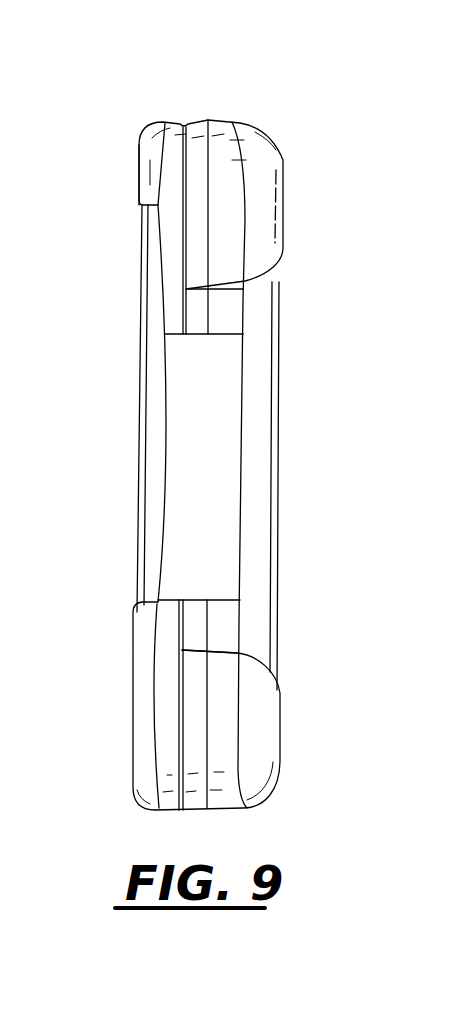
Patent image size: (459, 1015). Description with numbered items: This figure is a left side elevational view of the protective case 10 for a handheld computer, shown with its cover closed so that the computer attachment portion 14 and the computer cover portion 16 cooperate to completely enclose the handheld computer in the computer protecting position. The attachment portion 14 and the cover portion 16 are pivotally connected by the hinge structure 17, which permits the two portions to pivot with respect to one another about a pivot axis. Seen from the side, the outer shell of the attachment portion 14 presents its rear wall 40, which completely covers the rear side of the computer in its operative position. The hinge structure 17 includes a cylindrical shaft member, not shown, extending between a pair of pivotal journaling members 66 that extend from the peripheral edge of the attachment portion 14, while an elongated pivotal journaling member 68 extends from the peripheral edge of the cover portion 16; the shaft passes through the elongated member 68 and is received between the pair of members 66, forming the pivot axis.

The protective case 10 is at (213, 436).
The computer attachment portion 14 is at (268, 119).
The computer cover portion 16 is at (150, 115).
The hinge structure 17 is at (320, 340).
The rear wall 40 is at (277, 510).
The pivotal journaling members 66 is at (200, 308).
The elongated pivotal journaling member 68 is at (183, 432).